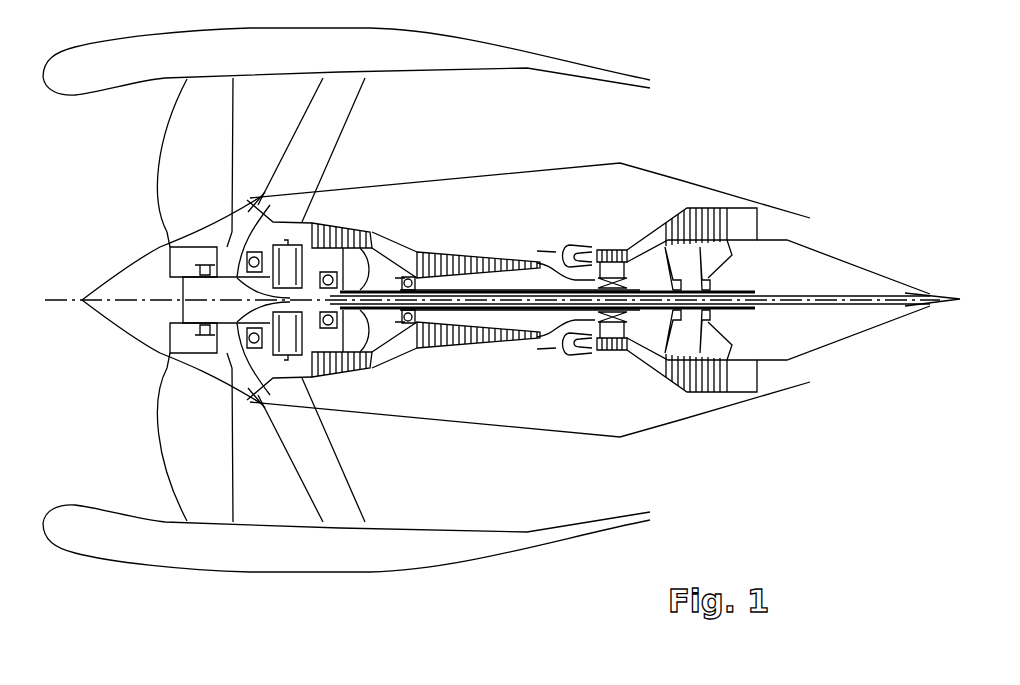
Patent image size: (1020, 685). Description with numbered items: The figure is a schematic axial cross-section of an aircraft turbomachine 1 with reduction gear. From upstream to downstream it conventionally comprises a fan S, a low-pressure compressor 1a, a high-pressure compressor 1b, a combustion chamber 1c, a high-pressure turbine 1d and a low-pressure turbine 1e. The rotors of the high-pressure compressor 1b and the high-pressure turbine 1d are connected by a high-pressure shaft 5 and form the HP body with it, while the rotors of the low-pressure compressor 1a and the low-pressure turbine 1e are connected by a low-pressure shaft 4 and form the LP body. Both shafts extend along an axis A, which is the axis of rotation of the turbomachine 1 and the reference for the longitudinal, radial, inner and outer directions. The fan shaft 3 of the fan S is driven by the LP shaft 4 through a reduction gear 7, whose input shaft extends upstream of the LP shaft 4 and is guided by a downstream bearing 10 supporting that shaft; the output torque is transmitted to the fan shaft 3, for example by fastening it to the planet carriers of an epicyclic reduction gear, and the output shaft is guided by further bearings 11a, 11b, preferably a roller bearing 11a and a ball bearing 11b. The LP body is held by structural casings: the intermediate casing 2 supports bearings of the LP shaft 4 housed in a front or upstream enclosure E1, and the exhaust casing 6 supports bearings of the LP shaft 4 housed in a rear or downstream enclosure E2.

The turbomachine 1 is at (786, 138).
The low-pressure compressor 1a is at (340, 213).
The high-pressure compressor 1b is at (501, 238).
The combustion chamber 1c is at (576, 236).
The high-pressure turbine 1d is at (611, 237).
The low-pressure turbine 1e is at (703, 203).
The intermediate casing 2 is at (370, 101).
The fan shaft 3 is at (172, 255).
The low-pressure shaft 4 is at (480, 312).
The high-pressure shaft 5 is at (540, 324).
The exhaust casing 6 is at (774, 221).
The reduction gear 7 is at (250, 200).
The downstream bearing 10 is at (329, 330).
The roller bearing 11a is at (173, 323).
The ball bearing 11b is at (247, 395).
The axis A is at (55, 299).
The fan S is at (134, 161).
The upstream enclosure E1 is at (243, 385).
The downstream enclosure E2 is at (712, 258).